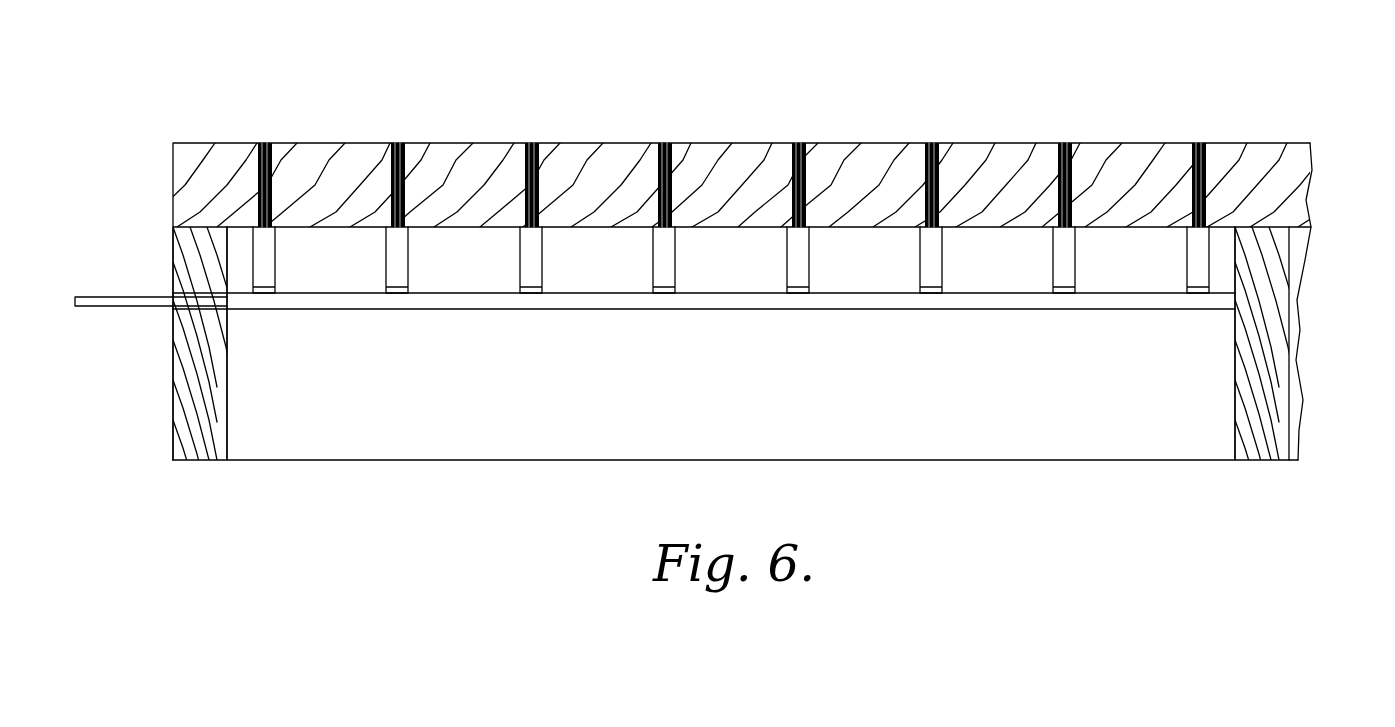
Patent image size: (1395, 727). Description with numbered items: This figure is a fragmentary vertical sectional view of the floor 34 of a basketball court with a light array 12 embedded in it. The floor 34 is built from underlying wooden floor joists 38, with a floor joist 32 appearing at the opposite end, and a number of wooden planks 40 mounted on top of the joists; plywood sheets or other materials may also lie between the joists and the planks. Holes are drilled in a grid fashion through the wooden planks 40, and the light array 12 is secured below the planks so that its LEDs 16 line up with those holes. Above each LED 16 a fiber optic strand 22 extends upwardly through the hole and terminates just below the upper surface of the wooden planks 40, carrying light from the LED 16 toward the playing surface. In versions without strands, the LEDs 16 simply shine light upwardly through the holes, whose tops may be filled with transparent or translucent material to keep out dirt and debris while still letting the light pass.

The light array 12 is at (130, 303).
The LED 16 is at (393, 254).
The fiber optic strand 22 is at (258, 155).
The floor joist 32 is at (202, 453).
The floor 34 is at (1317, 123).
The wooden floor joist 38 is at (1266, 447).
The wooden plank 40 is at (865, 153).